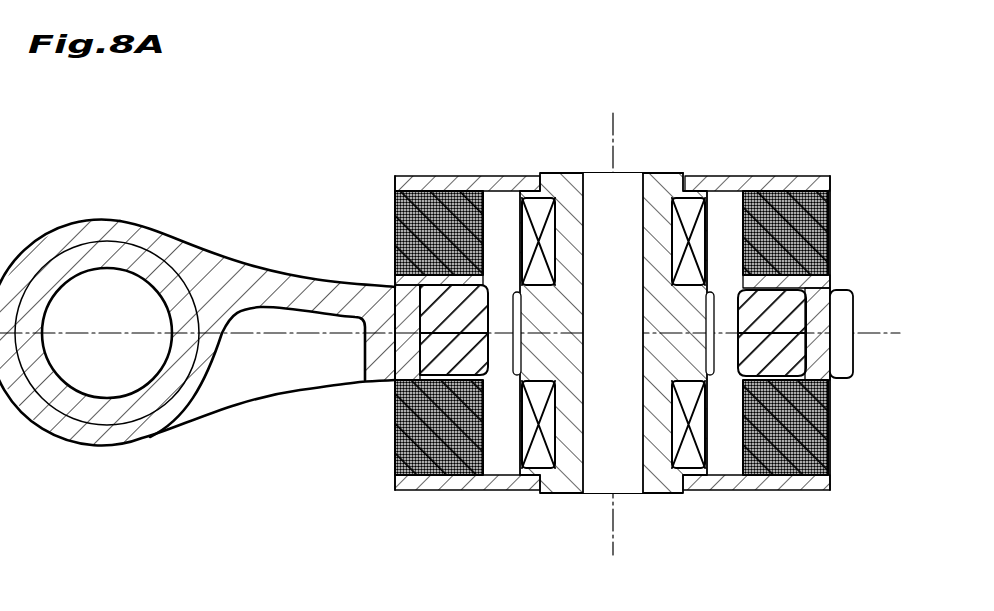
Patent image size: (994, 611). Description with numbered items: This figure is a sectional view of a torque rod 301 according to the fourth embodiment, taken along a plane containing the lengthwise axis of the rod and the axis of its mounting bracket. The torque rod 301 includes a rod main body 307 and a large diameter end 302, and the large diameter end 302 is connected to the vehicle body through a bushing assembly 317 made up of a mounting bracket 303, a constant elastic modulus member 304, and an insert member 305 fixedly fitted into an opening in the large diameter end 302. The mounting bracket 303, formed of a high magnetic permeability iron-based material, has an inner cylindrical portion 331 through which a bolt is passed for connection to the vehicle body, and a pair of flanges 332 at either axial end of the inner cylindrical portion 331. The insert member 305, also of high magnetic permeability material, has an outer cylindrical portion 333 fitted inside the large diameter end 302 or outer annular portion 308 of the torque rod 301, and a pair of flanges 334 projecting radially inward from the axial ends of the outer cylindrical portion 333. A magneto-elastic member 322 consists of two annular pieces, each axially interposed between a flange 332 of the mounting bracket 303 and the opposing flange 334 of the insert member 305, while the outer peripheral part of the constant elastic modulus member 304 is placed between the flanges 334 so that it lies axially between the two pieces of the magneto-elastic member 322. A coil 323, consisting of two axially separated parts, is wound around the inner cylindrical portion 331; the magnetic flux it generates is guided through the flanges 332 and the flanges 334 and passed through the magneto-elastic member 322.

The torque rod 301 is at (292, 203).
The large diameter end 302 is at (365, 356).
The mounting bracket 303 is at (562, 173).
The constant elastic modulus member 304 is at (493, 365).
The insert member 305 is at (395, 352).
The rod main body 307 is at (229, 260).
The outer annular portion 308 is at (355, 345).
The bushing assembly 317 is at (460, 153).
The magneto-elastic member 322 is at (832, 212).
The coil 323 is at (503, 192).
The inner cylindrical portion 331 is at (660, 173).
The flanges 332 is at (780, 175).
The outer cylindrical portion 333 is at (394, 297).
The flanges 334 is at (394, 302).